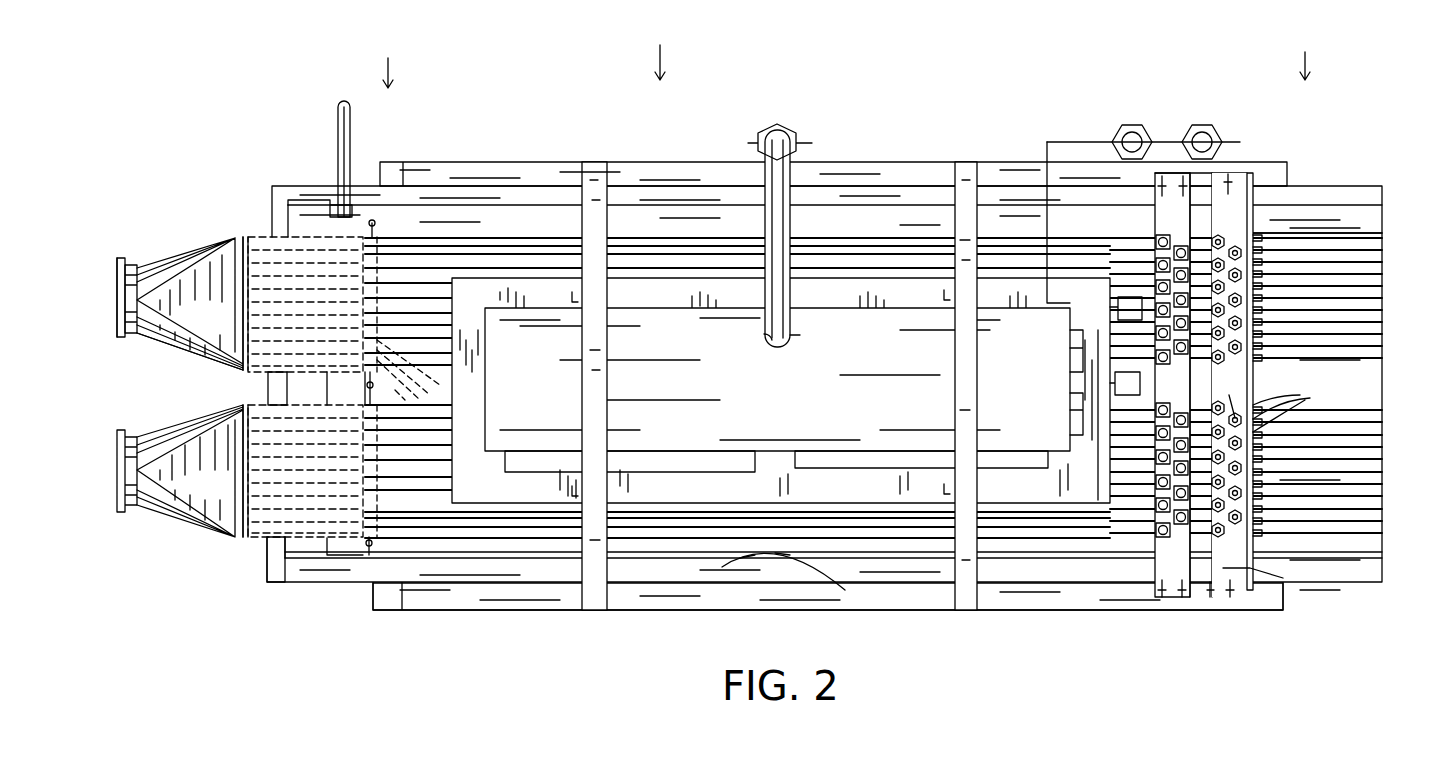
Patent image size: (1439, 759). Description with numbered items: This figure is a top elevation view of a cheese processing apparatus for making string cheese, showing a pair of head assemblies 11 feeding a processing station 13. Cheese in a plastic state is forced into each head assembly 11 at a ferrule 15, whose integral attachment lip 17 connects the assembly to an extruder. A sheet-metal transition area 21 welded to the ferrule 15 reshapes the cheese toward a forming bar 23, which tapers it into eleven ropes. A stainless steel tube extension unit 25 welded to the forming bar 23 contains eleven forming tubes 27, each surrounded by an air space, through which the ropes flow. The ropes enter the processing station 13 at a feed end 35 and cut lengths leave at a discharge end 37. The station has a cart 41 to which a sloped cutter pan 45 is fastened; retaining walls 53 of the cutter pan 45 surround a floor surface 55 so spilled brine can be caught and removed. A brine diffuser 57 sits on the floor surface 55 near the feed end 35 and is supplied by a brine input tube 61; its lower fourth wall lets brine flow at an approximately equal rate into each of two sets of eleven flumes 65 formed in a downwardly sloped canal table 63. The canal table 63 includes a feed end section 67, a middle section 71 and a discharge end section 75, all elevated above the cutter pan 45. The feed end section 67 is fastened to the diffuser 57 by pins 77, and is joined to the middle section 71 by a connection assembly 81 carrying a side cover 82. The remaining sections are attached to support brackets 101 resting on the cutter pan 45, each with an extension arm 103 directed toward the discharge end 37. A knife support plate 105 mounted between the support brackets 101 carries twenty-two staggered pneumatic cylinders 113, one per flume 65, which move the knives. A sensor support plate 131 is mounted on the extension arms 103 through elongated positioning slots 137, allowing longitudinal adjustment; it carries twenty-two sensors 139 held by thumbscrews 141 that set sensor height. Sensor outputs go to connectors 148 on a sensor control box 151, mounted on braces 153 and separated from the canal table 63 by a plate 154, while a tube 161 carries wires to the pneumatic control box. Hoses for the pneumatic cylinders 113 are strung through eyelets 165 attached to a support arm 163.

The head assembly 11 is at (175, 232).
The processing station 13 is at (660, 50).
The ferrule 15 is at (128, 338).
The attachment lip 17 is at (120, 338).
The transition area 21 is at (205, 352).
The forming bar 23 is at (240, 235).
The tube extension unit 25 is at (256, 240).
The forming tubes 27 is at (405, 378).
The feed end 35 is at (387, 61).
The discharge end 37 is at (1304, 53).
The cart 41 is at (505, 612).
The cutter pan 45 is at (280, 578).
The retaining walls 53 is at (1322, 190).
The floor surface 55 is at (268, 382).
The brine diffuser 57 is at (330, 215).
The brine input tube 61 is at (352, 132).
The canal table 63 is at (550, 225).
The flumes 65 is at (1384, 242).
The feed end section 67 is at (490, 215).
The middle section 71 is at (900, 222).
The discharge end section 75 is at (1350, 220).
The pins 77 is at (370, 220).
The connection assembly 81 is at (785, 556).
The side cover 82 is at (745, 560).
The support brackets 101 is at (1198, 190).
The extension arm 103 is at (1260, 182).
The knife support plate 105 is at (1173, 570).
The pneumatic cylinders 113 is at (1155, 532).
The sensor support plate 131 is at (1285, 575).
The positioning slots 137 is at (1212, 595).
The sensors 139 is at (1238, 412).
The thumbscrews 141 is at (1294, 403).
The connectors 148 is at (1072, 350).
The sensor control box 151 is at (812, 397).
The braces 153 is at (604, 175).
The plate 154 is at (495, 309).
The tube 161 is at (788, 130).
The support arm 163 is at (1050, 142).
The eyelets 165 is at (1130, 125).